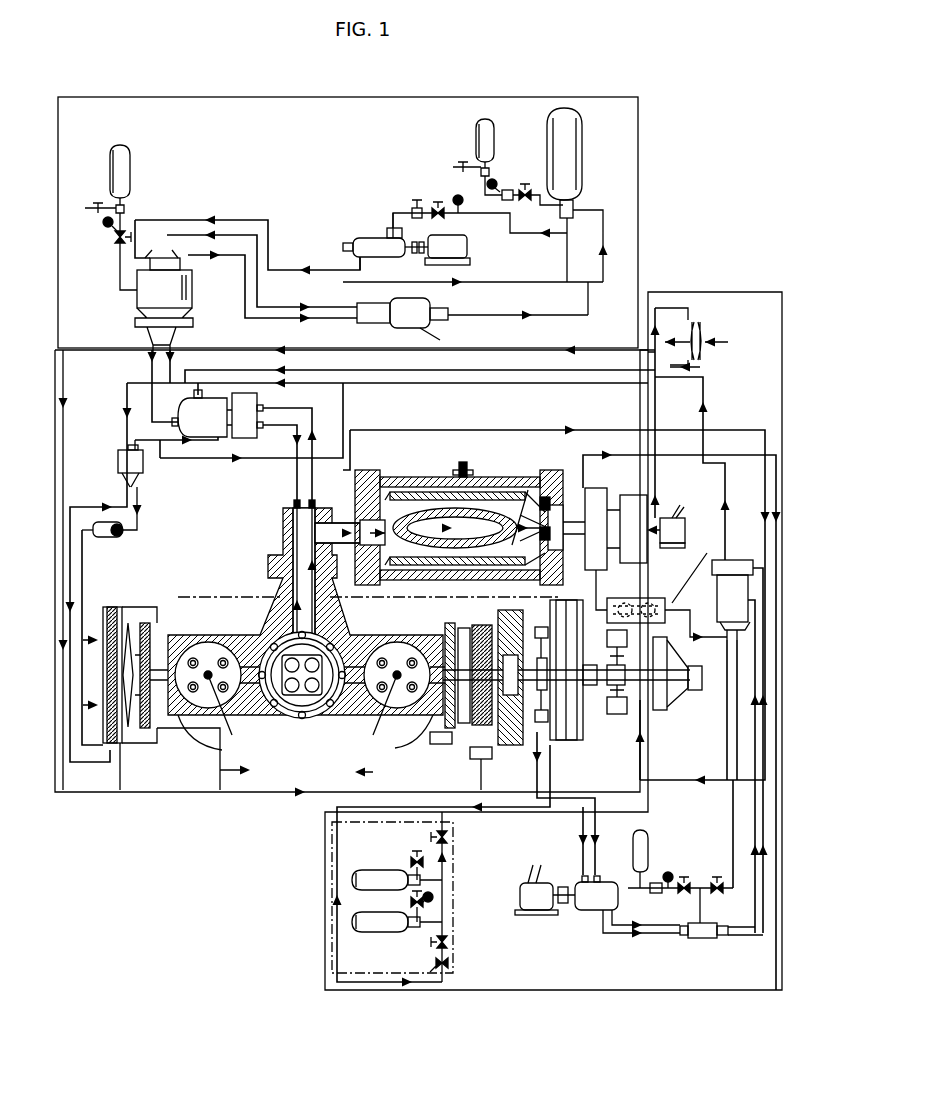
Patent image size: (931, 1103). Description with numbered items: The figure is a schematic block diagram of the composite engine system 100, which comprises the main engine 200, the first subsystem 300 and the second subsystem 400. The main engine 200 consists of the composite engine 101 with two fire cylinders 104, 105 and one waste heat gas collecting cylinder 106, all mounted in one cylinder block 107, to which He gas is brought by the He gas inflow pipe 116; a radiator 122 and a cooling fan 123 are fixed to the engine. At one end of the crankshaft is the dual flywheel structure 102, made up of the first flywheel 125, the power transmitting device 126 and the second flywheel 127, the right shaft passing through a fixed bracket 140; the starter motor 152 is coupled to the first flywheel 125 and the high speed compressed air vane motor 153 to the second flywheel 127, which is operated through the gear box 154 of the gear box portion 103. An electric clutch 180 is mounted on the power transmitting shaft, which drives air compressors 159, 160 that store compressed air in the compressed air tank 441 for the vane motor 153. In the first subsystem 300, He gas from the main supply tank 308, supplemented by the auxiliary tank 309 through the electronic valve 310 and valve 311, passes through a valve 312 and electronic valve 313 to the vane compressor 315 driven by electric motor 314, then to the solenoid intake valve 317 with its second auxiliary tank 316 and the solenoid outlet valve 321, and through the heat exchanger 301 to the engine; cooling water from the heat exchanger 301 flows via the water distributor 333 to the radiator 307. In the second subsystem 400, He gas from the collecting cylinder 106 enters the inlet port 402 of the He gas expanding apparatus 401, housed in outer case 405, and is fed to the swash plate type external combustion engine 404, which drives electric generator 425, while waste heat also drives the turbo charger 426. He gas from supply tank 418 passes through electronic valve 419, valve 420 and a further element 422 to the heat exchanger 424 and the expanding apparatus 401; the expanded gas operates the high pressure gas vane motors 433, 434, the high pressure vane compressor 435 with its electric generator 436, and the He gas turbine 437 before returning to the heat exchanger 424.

The composite engine system 100 is at (658, 102).
The composite engine 101 is at (196, 734).
The dual flywheel structure 102 is at (443, 762).
The gear box portion 103 is at (598, 752).
The fire cylinder 104 is at (221, 701).
The fire cylinder 105 is at (392, 701).
The waste heat gas collecting cylinder 106 is at (315, 718).
The cylinder block 107 is at (236, 628).
The He gas inflow pipe 116 is at (293, 500).
The radiator 122 is at (152, 627).
The cooling fan 123 is at (128, 622).
The first flywheel 125 is at (448, 622).
The power transmitting device 126 is at (466, 626).
The second flywheel 127 is at (500, 610).
The fixed bracket 140 is at (512, 745).
The starter motor 152 is at (433, 745).
The high speed compressed air vane motor 153 is at (475, 760).
The gear box 154 is at (610, 722).
The air compressor 159 is at (628, 692).
The air compressor 160 is at (603, 720).
The electric clutch 180 is at (665, 695).
The main engine 200 is at (247, 795).
The first subsystem 300 is at (245, 97).
The heat exchanger 301 is at (258, 400).
The radiator 307 is at (110, 596).
The He gas main supply tank 308 is at (578, 148).
The auxiliary He gas supply tank 309 is at (476, 140).
The electronic valve 310 is at (505, 189).
The valve 311 is at (527, 189).
The valve 312 is at (441, 217).
The electronic valve 313 is at (414, 207).
The electric motor 314 is at (466, 254).
The vane compressor 315 is at (368, 238).
The second auxiliary He gas tank 316 is at (131, 180).
The solenoid intake valve 317 is at (192, 290).
The solenoid outlet valve 321 is at (445, 311).
The water distributor 333 is at (143, 468).
The second subsystem 400 is at (742, 292).
The He gas expanding apparatus 401 is at (496, 465).
The inlet port 402 is at (362, 470).
The swash plate type external combustion engine 404 is at (627, 496).
The outer case 405 is at (420, 477).
The He gas supply tank 418 is at (648, 862).
The electronic valve 419 is at (655, 882).
The valve 420 is at (685, 882).
The heat exchanger 422 is at (704, 926).
The heat exchanger 424 is at (748, 560).
The electric generator 425 is at (672, 512).
The turbo charger 426 is at (705, 356).
The high pressure gas vane motor 433 is at (542, 655).
The high pressure gas vane motor 434 is at (558, 742).
The high pressure vane compressor 435 is at (590, 906).
The electric generator 436 is at (528, 906).
The He gas turbine 437 is at (665, 610).
The compressed air tank 441 is at (455, 880).